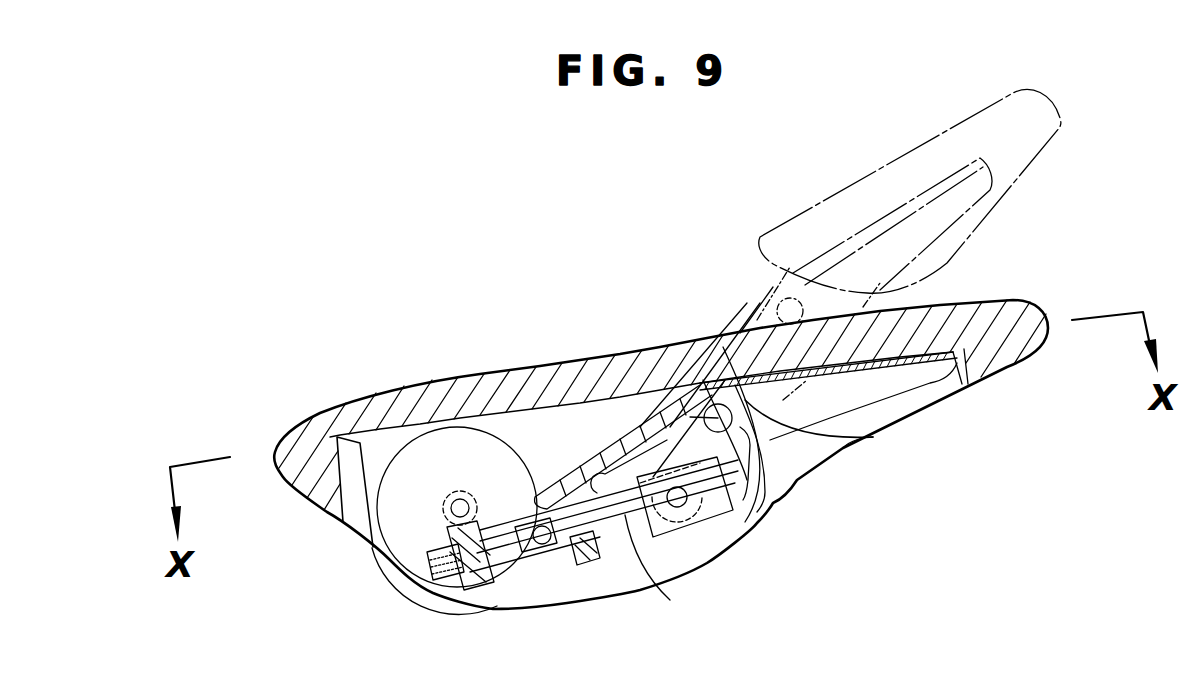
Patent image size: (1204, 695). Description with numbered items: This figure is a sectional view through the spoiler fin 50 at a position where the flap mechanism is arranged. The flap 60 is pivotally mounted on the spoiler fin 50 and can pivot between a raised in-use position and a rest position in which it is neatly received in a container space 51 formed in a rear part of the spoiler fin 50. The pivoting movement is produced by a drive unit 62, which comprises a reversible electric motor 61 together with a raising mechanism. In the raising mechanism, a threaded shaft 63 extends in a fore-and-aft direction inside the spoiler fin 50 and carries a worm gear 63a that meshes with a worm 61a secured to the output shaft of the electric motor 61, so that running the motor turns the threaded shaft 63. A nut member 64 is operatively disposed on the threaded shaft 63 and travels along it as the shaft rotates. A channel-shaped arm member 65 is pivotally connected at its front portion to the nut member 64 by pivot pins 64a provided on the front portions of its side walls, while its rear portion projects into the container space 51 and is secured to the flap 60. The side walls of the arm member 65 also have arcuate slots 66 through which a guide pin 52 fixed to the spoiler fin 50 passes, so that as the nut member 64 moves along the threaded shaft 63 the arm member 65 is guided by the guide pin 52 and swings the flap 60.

The spoiler fin 50 is at (448, 360).
The container space 51 is at (853, 441).
The guide pin 52 is at (688, 385).
The flap 60 is at (1012, 374).
The reversible electric motor 61 is at (410, 473).
The worm 61a is at (461, 490).
The drive unit 62 is at (692, 548).
The threaded shaft 63 is at (617, 537).
The worm gear 63a is at (483, 587).
The nut member 64 is at (533, 567).
The pivot pins 64a is at (567, 563).
The channel-shaped arm member 65 is at (620, 441).
The arcuate slots 66 is at (775, 503).